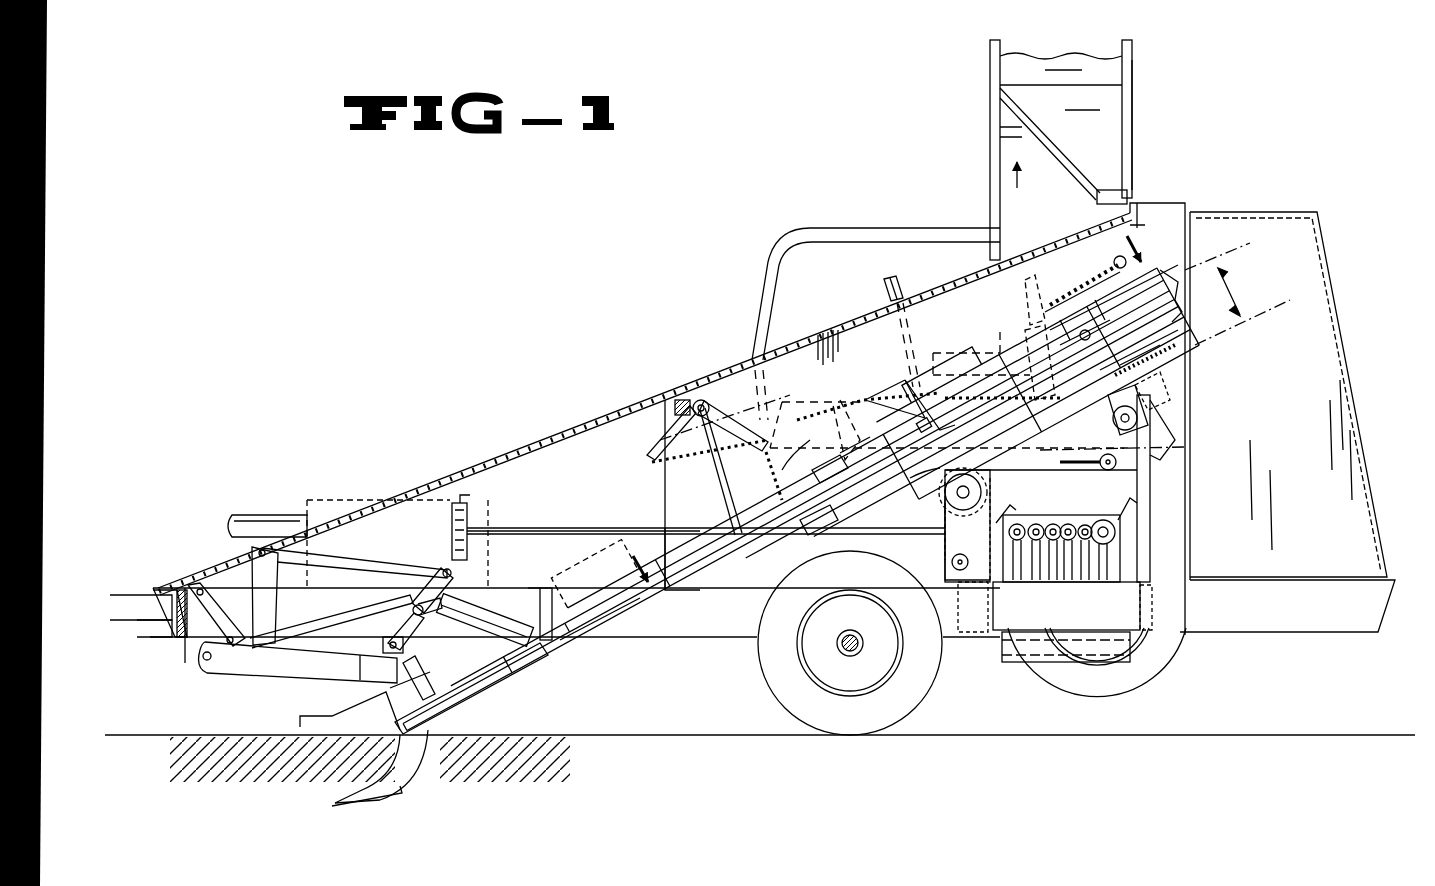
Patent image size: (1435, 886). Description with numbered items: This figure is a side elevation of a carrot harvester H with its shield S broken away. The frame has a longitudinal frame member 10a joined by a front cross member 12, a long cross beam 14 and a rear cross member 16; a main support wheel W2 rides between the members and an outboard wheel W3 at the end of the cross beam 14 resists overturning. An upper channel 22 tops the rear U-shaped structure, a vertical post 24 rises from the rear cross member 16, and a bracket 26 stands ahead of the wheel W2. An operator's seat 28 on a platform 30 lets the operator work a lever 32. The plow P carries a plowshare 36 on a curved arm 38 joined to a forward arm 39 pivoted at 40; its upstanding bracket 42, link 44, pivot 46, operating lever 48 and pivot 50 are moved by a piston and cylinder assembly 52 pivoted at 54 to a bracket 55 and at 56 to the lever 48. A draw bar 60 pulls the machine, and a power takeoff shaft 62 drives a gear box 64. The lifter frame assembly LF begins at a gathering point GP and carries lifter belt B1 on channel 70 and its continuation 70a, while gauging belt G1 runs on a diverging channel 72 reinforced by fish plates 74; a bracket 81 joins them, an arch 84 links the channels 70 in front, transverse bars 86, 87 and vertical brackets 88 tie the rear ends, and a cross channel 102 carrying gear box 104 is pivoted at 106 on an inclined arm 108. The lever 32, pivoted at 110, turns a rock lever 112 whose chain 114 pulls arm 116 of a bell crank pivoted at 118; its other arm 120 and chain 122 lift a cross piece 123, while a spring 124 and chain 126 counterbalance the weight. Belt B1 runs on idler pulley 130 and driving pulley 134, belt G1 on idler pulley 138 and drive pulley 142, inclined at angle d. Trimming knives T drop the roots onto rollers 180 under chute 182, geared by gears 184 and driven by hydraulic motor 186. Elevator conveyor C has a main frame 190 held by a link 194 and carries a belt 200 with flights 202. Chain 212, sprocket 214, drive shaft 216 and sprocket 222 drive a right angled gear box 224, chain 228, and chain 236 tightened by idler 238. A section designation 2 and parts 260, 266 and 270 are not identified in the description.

The longitudinal frame member 10a is at (1290, 626).
The front cross member 12 is at (165, 638).
The long cross beam 14 is at (996, 610).
The rear cross member 16 is at (1138, 608).
The upper channel 22 is at (1150, 203).
The vertical post 24 is at (1160, 487).
The upwardly projecting bracket 26 is at (665, 485).
The operator's seat 28 is at (975, 342).
The platform 30 is at (812, 440).
The lever 32 is at (902, 285).
The plowshare 36 is at (330, 800).
The curved arm 38 is at (426, 762).
The forwardly projecting arm 39 is at (260, 675).
The pivot 40 is at (203, 660).
The upstanding bracket 42 is at (276, 602).
The link 44 is at (320, 562).
The pivot 46 is at (440, 570).
The operating lever 48 is at (448, 600).
The pivot 50 is at (417, 654).
The piston and cylinder assembly 52 is at (487, 618).
The pivot 54 is at (546, 606).
The bracket 55 is at (535, 590).
The pivot 56 is at (402, 645).
The draw bar 60 is at (130, 595).
The power takeoff shaft 62 is at (242, 516).
The gear box 64 is at (323, 505).
The inverted U-shaped channel 70 is at (600, 578).
The continuation section 70a is at (895, 470).
The U-shaped channel 72 is at (850, 470).
The fish plates 74 is at (703, 545).
The bracket 81 is at (825, 482).
The arch 84 is at (395, 688).
The transverse bars 86 is at (1182, 357).
The transverse bar 87 is at (1180, 242).
The vertical brackets 88 is at (1182, 262).
The cross channel 102 is at (1162, 405).
The left hand gear box 104 is at (1112, 425).
The pivot 106 is at (1170, 390).
The inclined arm 108 is at (1165, 420).
The pivot 110 is at (910, 430).
The rock lever 112 is at (870, 395).
The chain 114 is at (838, 398).
The arm 116 is at (680, 430).
The pivot 118 is at (700, 396).
The arm 120 is at (713, 405).
The chain 122 is at (735, 465).
The cross piece 123 is at (760, 493).
The spring 124 is at (985, 375).
The chain 126 is at (965, 360).
The lower idler pulley 130 is at (452, 712).
The driving pulley 134 is at (1182, 372).
The forward idler pulley 138 is at (813, 530).
The rear drive pulley 142 is at (1183, 310).
The conveyor rollers 180 is at (1040, 582).
The chute 182 is at (1115, 508).
The gears 184 is at (1070, 525).
The hydraulic motor 186 is at (1116, 532).
The main frame 190 is at (1133, 105).
The link 194 is at (1063, 146).
The endless flexible belt 200 is at (1063, 60).
The upstanding flights 202 is at (1000, 130).
The chain 212 is at (470, 503).
The sprocket 214 is at (470, 518).
The main drive shaft 216 is at (660, 530).
The sprocket 222 is at (960, 540).
The right angled gear box 224 is at (945, 568).
The chain 228 is at (952, 560).
The chain 236 is at (1186, 447).
The idler 238 is at (1116, 463).
The pivot 260 is at (1080, 333).
The chain 266 is at (1085, 280).
The sprocket 270 is at (1120, 258).
The section line 2 is at (878, 407).
The lifter belt B1 is at (567, 652).
The elevator conveyor C is at (1140, 58).
The gathering point GP is at (330, 718).
The gauging belt G1 is at (1020, 362).
The harvester H is at (572, 312).
The lifter frame assembly LF is at (575, 535).
The plow P is at (430, 778).
The shield S is at (1325, 222).
The trimming knives T is at (1005, 465).
The main frame support wheel W2 is at (757, 680).
The outboard wheel W3 is at (1186, 665).
The inclination angle d is at (1226, 292).